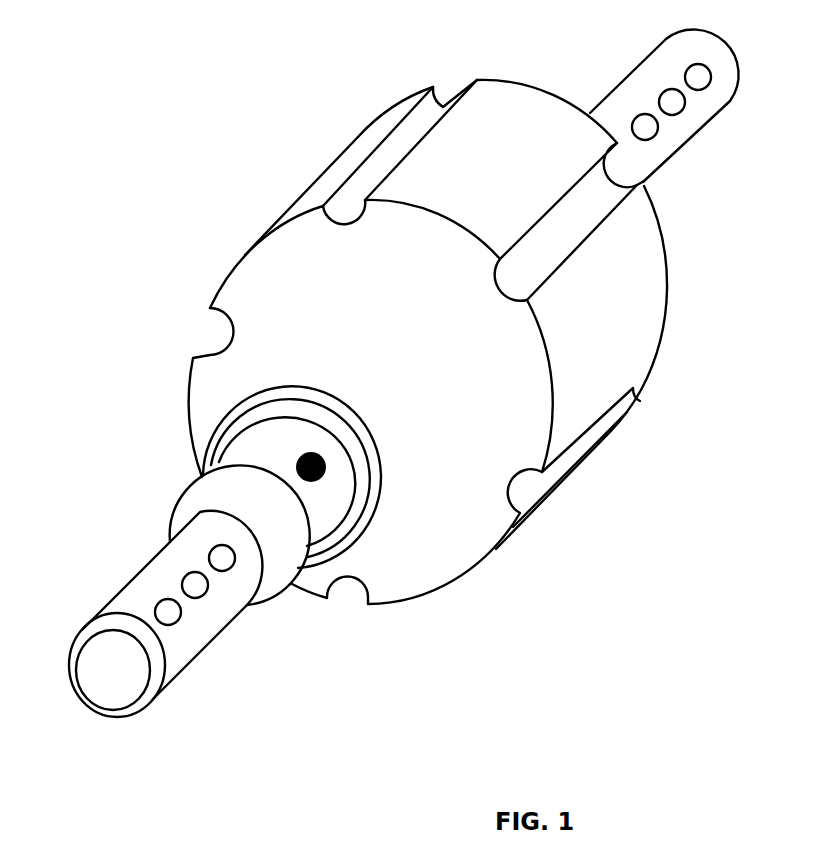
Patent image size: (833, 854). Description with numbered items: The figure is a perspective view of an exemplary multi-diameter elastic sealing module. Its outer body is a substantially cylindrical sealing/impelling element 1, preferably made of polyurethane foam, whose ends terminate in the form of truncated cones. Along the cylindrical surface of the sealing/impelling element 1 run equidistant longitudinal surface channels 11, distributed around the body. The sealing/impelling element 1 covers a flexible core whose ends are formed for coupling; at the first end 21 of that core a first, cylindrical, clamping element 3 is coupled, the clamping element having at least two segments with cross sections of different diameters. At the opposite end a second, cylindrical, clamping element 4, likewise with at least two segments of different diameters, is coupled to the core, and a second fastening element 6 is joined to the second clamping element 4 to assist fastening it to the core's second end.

The sealing/impelling element 1 is at (582, 492).
The first clamping element 3 is at (325, 595).
The second clamping element 4 is at (677, 168).
The second fastening element 6 is at (326, 458).
The longitudinal surface channels 11 is at (373, 170).
The first end of the flexible core 21 is at (322, 402).